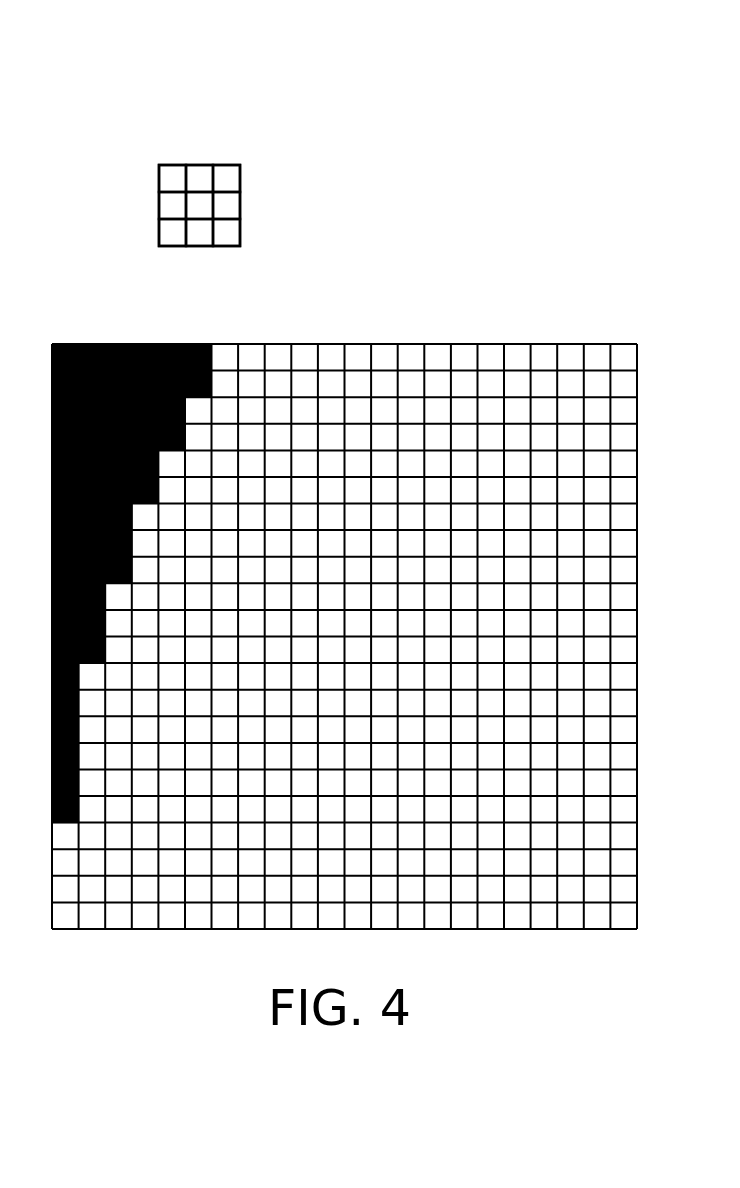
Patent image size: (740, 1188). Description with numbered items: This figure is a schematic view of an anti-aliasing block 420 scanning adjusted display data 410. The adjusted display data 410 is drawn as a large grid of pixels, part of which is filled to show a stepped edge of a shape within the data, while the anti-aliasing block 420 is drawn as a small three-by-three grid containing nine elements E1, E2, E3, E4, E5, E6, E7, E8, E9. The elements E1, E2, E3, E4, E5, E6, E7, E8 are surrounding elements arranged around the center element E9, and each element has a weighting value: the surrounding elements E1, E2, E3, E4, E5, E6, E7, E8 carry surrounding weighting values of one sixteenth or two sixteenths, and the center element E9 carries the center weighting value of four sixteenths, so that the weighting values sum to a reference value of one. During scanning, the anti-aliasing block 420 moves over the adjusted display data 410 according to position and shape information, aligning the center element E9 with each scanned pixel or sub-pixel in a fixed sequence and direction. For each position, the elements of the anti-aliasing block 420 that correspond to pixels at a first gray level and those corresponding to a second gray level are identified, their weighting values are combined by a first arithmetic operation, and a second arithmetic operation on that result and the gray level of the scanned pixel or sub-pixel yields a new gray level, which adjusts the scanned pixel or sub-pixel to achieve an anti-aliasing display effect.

The adjusted display data 410 is at (518, 346).
The anti-aliasing block 420 is at (191, 165).
The surrounding element E1 is at (167, 177).
The surrounding element E2 is at (198, 173).
The surrounding element E3 is at (227, 173).
The surrounding element E4 is at (230, 207).
The surrounding element E5 is at (230, 233).
The surrounding element E6 is at (200, 238).
The surrounding element E7 is at (168, 233).
The surrounding element E8 is at (163, 205).
The center element E9 is at (202, 205).